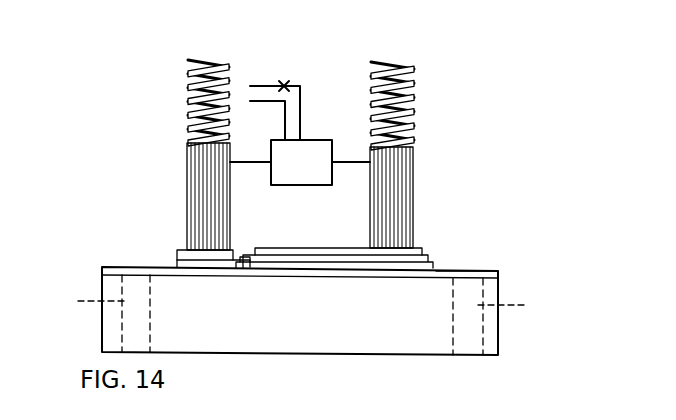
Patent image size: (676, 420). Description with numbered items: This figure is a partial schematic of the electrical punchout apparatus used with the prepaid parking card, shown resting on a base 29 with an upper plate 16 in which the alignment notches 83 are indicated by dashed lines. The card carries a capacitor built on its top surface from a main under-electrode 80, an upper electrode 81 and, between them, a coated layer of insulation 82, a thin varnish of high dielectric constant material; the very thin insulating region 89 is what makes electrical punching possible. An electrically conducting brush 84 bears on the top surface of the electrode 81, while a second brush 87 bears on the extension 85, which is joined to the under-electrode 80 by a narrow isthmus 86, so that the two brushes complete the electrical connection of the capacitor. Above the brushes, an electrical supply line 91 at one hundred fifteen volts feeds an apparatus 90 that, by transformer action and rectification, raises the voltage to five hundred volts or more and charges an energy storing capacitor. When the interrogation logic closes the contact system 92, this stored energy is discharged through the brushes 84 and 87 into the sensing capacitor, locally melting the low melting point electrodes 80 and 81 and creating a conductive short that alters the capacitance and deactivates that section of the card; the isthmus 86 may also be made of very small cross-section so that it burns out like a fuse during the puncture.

The base plate 16 is at (497, 273).
The housing base 29 is at (168, 290).
The under-electrode 80 is at (445, 272).
The electrode 81 is at (292, 248).
The coated layer of insulation 82 is at (432, 263).
The notches 83 is at (303, 305).
The electrically conducting brush 84 is at (404, 187).
The extension 85 is at (208, 266).
The isthmus 86 is at (245, 257).
The second brush 87 is at (198, 175).
The thin insulating region 89 is at (185, 253).
The apparatus 90 is at (320, 152).
The electrical supply line 91 is at (250, 90).
The contact system 92 is at (285, 85).